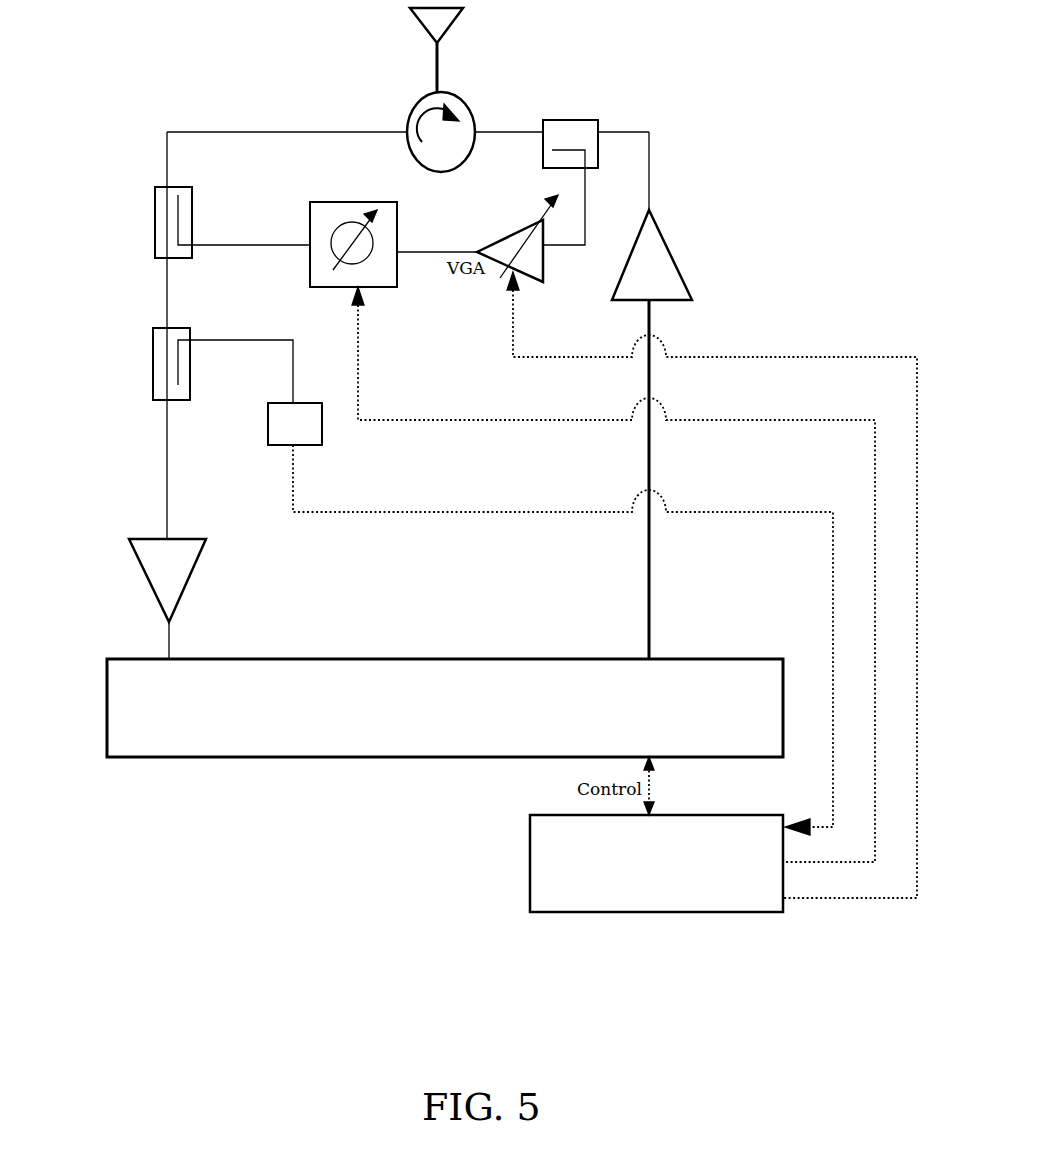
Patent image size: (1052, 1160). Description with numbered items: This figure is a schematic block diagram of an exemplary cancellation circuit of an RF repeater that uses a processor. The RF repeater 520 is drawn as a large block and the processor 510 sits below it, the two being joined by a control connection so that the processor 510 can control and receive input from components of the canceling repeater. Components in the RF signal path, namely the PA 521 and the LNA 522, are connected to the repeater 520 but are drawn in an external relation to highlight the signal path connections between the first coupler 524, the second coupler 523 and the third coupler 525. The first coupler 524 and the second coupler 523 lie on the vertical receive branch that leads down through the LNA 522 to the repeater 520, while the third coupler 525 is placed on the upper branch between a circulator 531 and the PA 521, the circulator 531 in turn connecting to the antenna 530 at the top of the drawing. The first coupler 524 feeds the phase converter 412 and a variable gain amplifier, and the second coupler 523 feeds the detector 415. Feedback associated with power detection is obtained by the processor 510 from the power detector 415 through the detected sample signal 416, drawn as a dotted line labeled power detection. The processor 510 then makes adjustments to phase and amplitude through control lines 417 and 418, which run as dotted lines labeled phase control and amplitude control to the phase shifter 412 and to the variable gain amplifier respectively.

The antenna 530 is at (455, 28).
The circulator 531 is at (406, 112).
The coupler 3 525 is at (598, 122).
The coupler 1 524 is at (153, 195).
The coupler 2 523 is at (153, 386).
The phase converter 412 is at (310, 200).
The PA 521 is at (680, 268).
The detector 415 is at (322, 424).
The LNA 522 is at (140, 570).
The RF repeater 520 is at (300, 757).
The processor 510 is at (530, 865).
The control line 418 is at (760, 357).
The control line 417 is at (758, 420).
The detected sample signal 416 is at (735, 512).